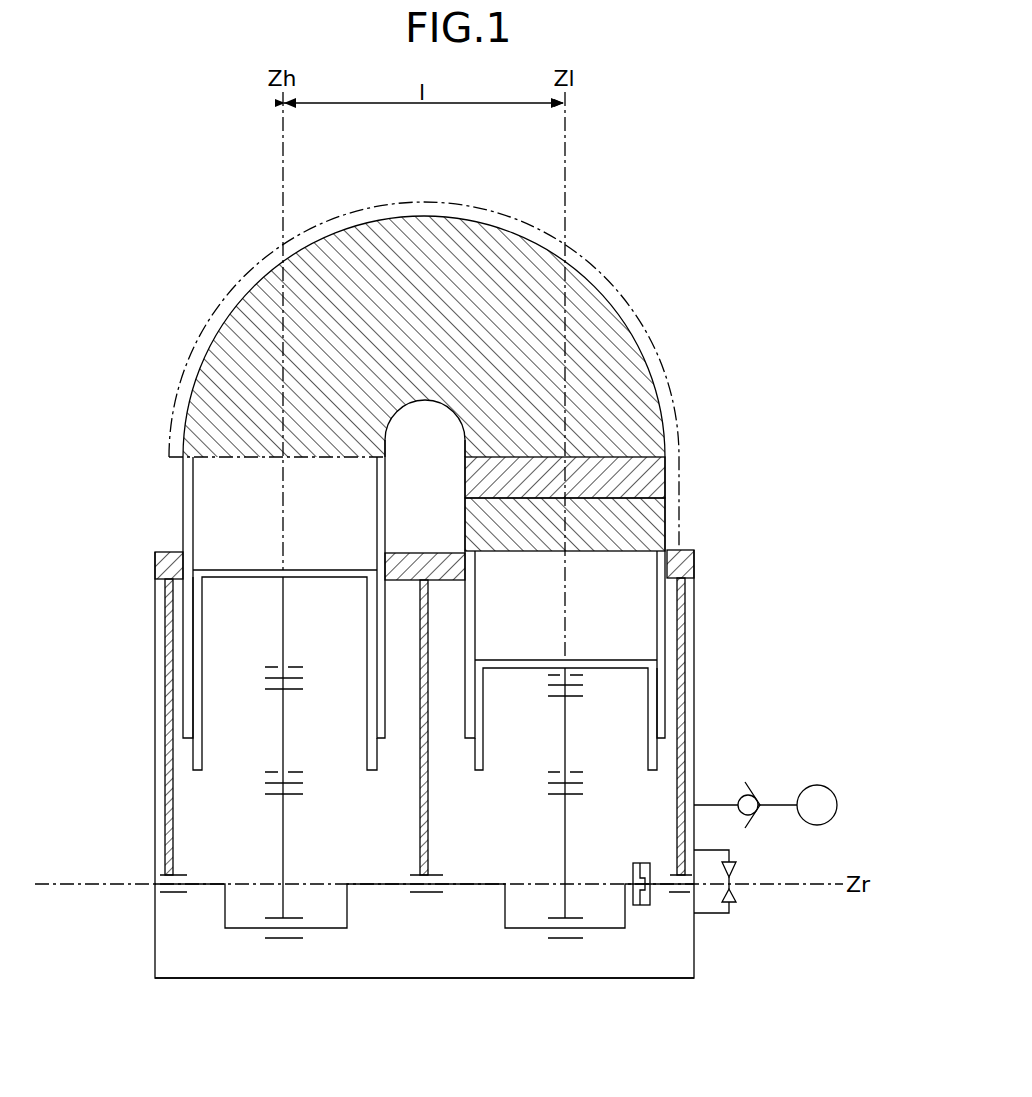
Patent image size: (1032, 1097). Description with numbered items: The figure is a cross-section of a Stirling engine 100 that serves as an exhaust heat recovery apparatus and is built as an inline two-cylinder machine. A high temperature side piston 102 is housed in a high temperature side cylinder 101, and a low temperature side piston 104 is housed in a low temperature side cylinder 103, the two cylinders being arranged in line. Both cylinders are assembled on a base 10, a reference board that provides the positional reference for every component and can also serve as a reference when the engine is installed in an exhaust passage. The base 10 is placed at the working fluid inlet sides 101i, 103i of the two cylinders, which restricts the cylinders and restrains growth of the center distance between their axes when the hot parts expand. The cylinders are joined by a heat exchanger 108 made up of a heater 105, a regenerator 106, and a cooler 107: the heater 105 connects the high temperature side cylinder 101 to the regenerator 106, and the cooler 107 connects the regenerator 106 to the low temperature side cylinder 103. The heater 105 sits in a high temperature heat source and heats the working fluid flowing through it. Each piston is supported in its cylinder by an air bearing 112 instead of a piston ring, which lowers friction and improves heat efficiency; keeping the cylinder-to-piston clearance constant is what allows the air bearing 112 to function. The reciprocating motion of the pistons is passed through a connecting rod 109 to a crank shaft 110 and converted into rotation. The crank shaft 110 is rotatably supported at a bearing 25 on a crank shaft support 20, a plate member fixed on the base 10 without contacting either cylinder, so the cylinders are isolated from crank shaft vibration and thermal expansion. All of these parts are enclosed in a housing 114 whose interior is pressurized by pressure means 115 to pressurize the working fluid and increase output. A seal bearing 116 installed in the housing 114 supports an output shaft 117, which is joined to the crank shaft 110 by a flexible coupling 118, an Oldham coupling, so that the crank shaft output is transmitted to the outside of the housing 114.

The Stirling engine 100 is at (140, 188).
The base 10 is at (694, 572).
The crank shaft support 20 is at (165, 835).
The bearing 25 is at (178, 875).
The high temperature side cylinder 101 is at (183, 525).
The inlet side of the high temperature side cylinder 101i is at (276, 448).
The high temperature side piston 102 is at (200, 644).
The low temperature side cylinder 103 is at (665, 722).
The inlet side of the low temperature side cylinder 103i is at (574, 448).
The low temperature side piston 104 is at (652, 700).
The heater 105 is at (468, 224).
The regenerator 106 is at (658, 476).
The cooler 107 is at (664, 535).
The heat exchanger 108 is at (593, 264).
The connecting rod 109 is at (283, 840).
The crank shaft 110 is at (470, 886).
The air bearing 112 is at (192, 668).
The housing 114 is at (360, 979).
The pressure means 115 is at (817, 785).
The seal bearing 116 is at (740, 893).
The output shaft 117 is at (740, 873).
The flexible coupling 118 is at (650, 907).